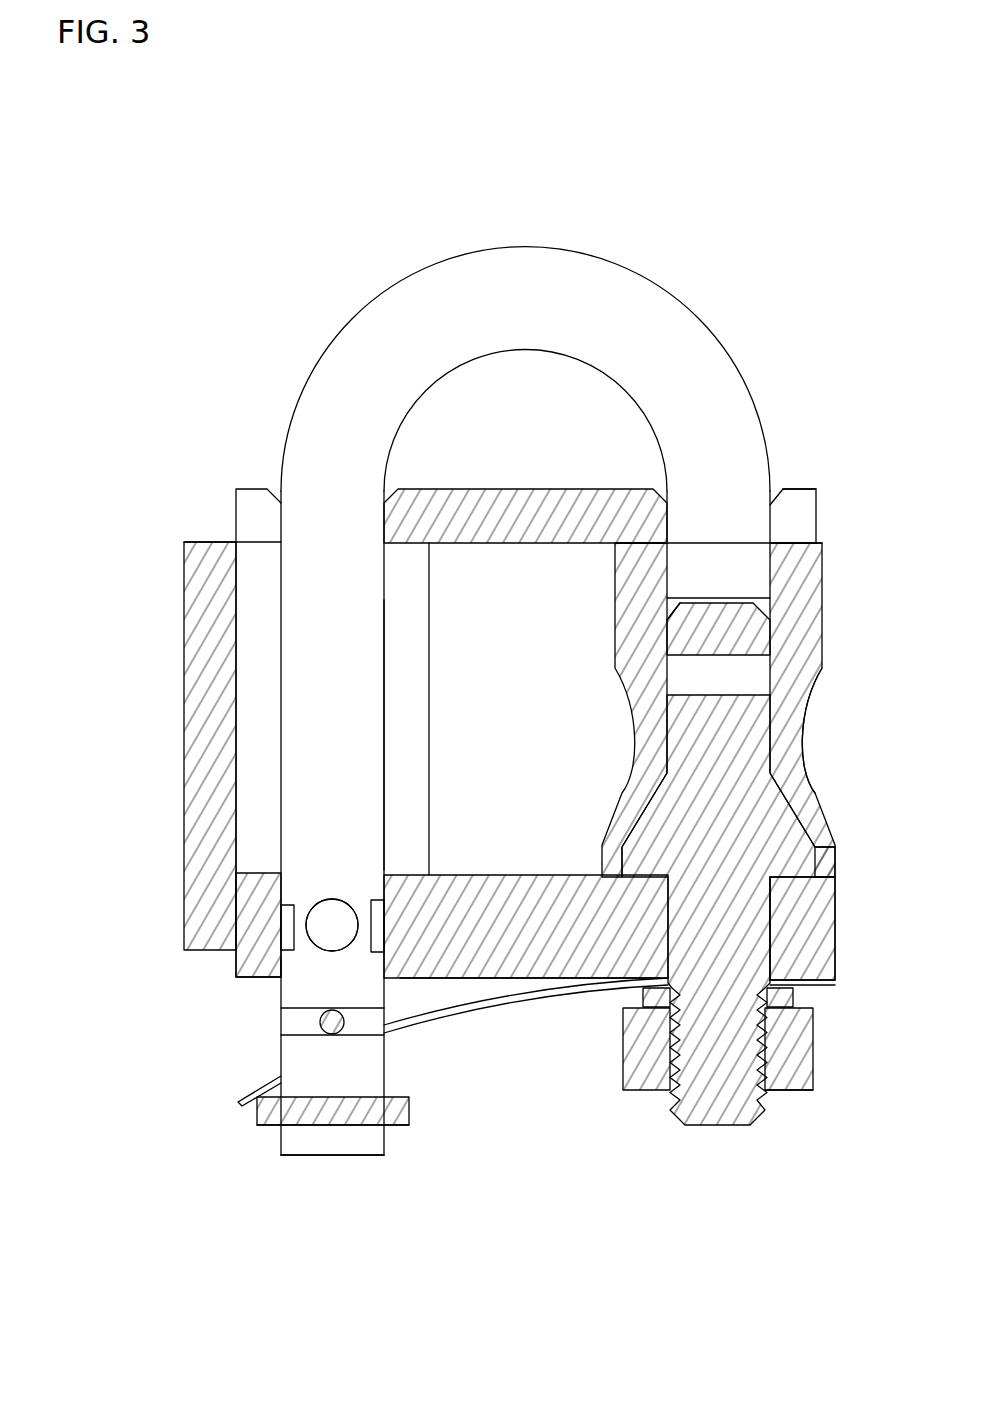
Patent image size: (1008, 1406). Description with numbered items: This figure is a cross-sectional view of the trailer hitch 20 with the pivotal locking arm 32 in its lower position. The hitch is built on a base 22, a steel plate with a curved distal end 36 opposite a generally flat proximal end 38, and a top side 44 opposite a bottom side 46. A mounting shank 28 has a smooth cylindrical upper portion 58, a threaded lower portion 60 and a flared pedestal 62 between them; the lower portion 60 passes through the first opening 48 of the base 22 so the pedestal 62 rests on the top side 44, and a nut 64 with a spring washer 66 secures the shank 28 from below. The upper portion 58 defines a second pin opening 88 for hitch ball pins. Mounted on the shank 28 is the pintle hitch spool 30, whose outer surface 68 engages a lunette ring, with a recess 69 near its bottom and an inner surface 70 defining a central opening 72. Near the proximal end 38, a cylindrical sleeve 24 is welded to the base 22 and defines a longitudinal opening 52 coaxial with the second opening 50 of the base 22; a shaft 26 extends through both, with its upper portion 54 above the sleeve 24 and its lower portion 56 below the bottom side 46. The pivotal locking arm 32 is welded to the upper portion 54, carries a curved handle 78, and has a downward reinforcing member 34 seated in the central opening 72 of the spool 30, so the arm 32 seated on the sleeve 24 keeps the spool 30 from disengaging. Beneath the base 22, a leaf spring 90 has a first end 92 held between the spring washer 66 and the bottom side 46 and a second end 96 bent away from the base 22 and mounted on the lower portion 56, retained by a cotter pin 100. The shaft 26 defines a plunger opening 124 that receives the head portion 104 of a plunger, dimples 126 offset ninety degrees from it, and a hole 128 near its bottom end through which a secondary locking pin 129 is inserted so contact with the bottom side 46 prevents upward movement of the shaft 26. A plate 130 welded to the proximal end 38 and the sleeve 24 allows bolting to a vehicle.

The trailer hitch 20 is at (340, 255).
The base 22 is at (835, 927).
The sleeve 24 is at (430, 715).
The shaft 26 is at (387, 773).
The mounting shank 28 is at (717, 710).
The pintle hitch spool 30 is at (822, 560).
The pivotal locking arm 32 is at (505, 489).
The reinforcing member 34 is at (822, 545).
The curved distal end 36 is at (835, 893).
The proximal end 38 is at (235, 963).
The top side 44 is at (530, 875).
The bottom side 46 is at (480, 977).
The first opening 48 is at (770, 955).
The second opening 50 is at (280, 960).
The longitudinal opening 52 is at (387, 673).
The upper portion of the shaft 54 is at (281, 513).
The lower portion of the shaft 56 is at (282, 1158).
The upper portion of the mounting shank 58 is at (770, 635).
The lower portion of the mounting shank 60 is at (765, 1047).
The flared pedestal 62 is at (835, 847).
The nut 64 is at (813, 1078).
The spring washer 66 is at (793, 1000).
The outer surface 68 is at (620, 642).
The recess 69 is at (805, 745).
The inner surface 70 is at (670, 602).
The central opening 72 is at (757, 600).
The curved handle 78 is at (545, 248).
The second pin opening 88 is at (723, 695).
The leaf spring 90 is at (545, 992).
The first end of the leaf spring 92 is at (835, 983).
The second end of the leaf spring 96 is at (257, 1105).
The cotter pin 100 is at (258, 1125).
The head portion 104 is at (330, 913).
The plunger opening 124 is at (307, 918).
The dimple 126 is at (302, 922).
The hole 128 is at (320, 1018).
The secondary locking pin 129 is at (320, 1030).
The plate 130 is at (184, 742).